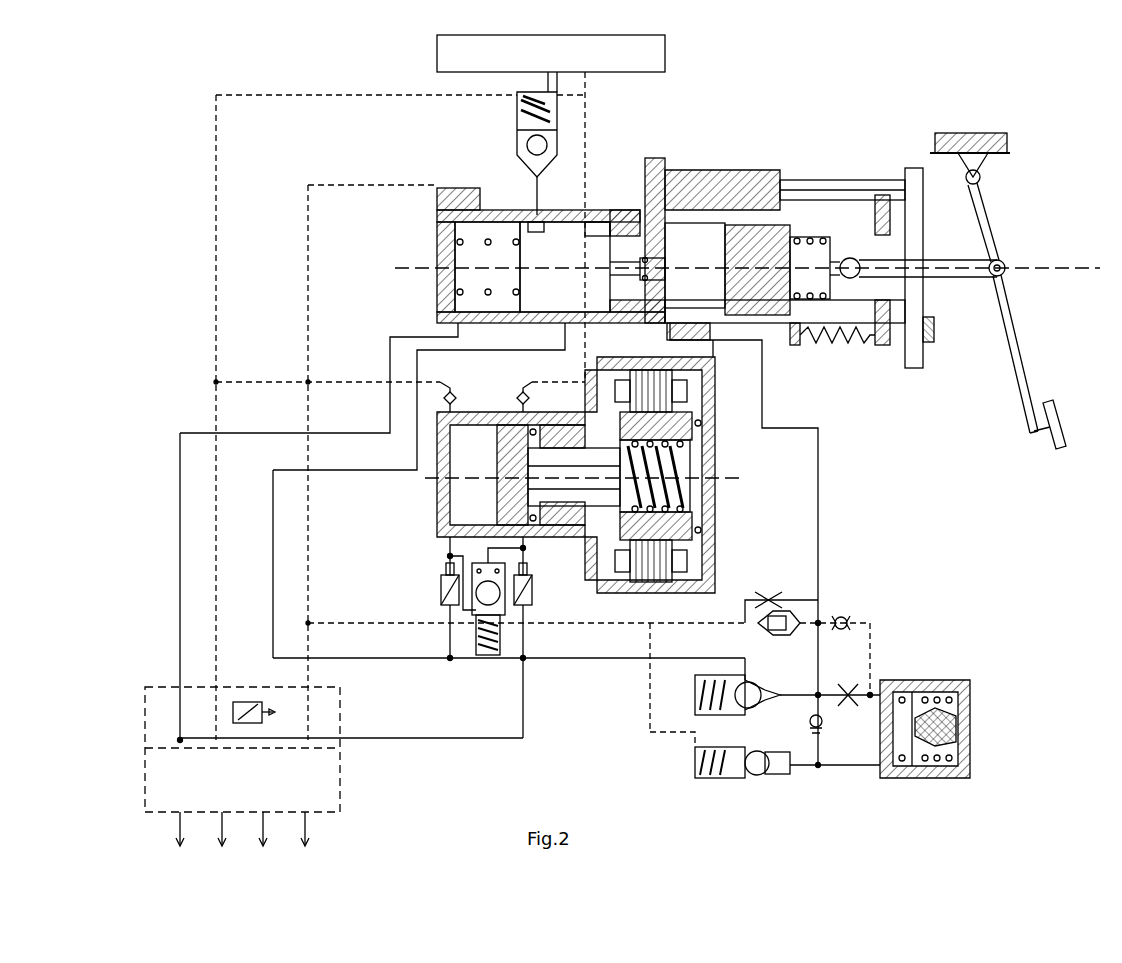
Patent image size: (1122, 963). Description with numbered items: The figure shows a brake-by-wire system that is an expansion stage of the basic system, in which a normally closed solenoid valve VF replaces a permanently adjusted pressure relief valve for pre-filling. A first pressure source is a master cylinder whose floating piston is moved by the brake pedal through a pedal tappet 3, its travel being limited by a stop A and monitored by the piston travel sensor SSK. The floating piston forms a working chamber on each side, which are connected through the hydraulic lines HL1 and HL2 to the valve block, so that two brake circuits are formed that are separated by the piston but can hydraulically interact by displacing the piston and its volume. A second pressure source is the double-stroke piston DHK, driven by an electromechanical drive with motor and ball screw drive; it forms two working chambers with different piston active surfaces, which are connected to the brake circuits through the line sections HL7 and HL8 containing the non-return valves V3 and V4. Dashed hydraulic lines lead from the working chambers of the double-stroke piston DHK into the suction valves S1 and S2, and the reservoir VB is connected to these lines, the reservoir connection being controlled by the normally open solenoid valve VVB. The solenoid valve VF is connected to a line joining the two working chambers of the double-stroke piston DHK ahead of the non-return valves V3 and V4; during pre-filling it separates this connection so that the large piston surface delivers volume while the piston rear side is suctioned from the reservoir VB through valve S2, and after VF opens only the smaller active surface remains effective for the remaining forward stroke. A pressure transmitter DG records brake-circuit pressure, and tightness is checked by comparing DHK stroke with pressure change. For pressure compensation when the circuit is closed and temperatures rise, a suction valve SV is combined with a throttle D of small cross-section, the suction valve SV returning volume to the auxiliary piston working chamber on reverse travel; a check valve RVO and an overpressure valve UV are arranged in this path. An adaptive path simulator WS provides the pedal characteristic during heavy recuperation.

The reservoir VB is at (551, 63).
The normally open solenoid valve VVB is at (517, 121).
The stop A is at (628, 210).
The pedal tappet 3 is at (702, 258).
The piston travel sensor s_SK SSK is at (437, 197).
The non-return valve or suction valve S1 is at (453, 392).
The non-return valve or suction valve S2 is at (519, 392).
The double-stroke piston DHK is at (510, 447).
The hydraulic line or brake circuit section HL1 is at (180, 488).
The hydraulic line or brake circuit section HL2 is at (270, 498).
The non-return valve or pressure relief valve V3 is at (440, 585).
The non-return valve or pressure relief valve V4 is at (536, 585).
The normally closed solenoid valve VF is at (487, 660).
The pressure transmitter DG is at (242, 752).
The hydraulic line or brake circuit section HL7 is at (355, 661).
The hydraulic line or brake circuit section HL8 is at (400, 742).
The suction valve SV is at (790, 600).
The check valve RVO is at (846, 618).
The throttle D is at (850, 688).
The overpressure valve ÜV UV is at (826, 730).
The path simulator WS is at (942, 686).